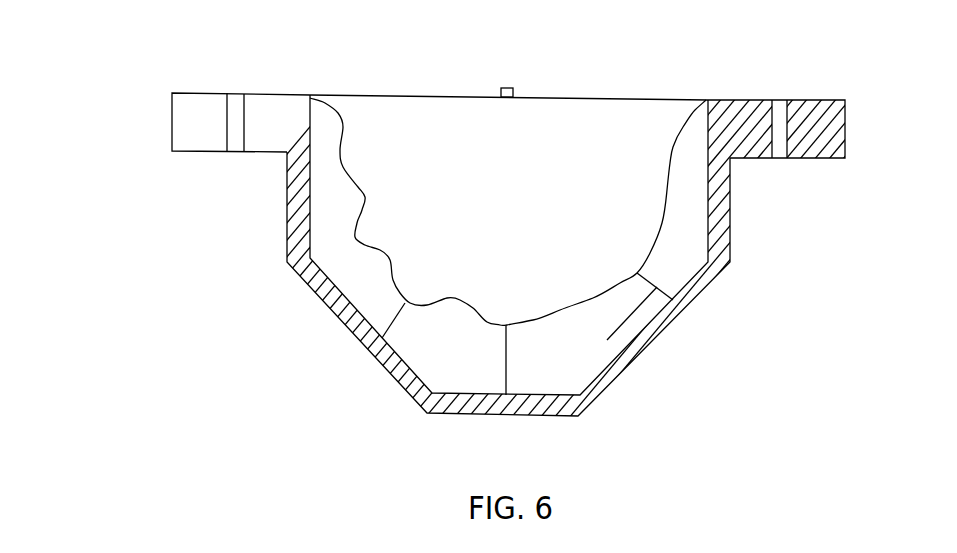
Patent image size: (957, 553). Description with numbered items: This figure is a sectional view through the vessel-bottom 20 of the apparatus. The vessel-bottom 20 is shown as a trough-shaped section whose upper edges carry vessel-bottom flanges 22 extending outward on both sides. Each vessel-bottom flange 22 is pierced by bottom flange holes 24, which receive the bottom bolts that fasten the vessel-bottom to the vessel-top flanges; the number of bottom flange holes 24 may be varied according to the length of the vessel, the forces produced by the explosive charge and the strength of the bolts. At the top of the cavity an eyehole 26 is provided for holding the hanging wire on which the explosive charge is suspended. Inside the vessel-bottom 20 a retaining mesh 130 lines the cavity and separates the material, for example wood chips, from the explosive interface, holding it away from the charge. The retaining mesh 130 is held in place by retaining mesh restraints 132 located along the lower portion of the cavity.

The vessel-bottom 20 is at (674, 355).
The vessel-bottom flange 22 is at (200, 152).
The bottom flange hole 24 is at (232, 128).
The eyehole 26 is at (507, 92).
The retaining mesh 130 is at (365, 197).
The retaining mesh restraint 132 is at (393, 322).